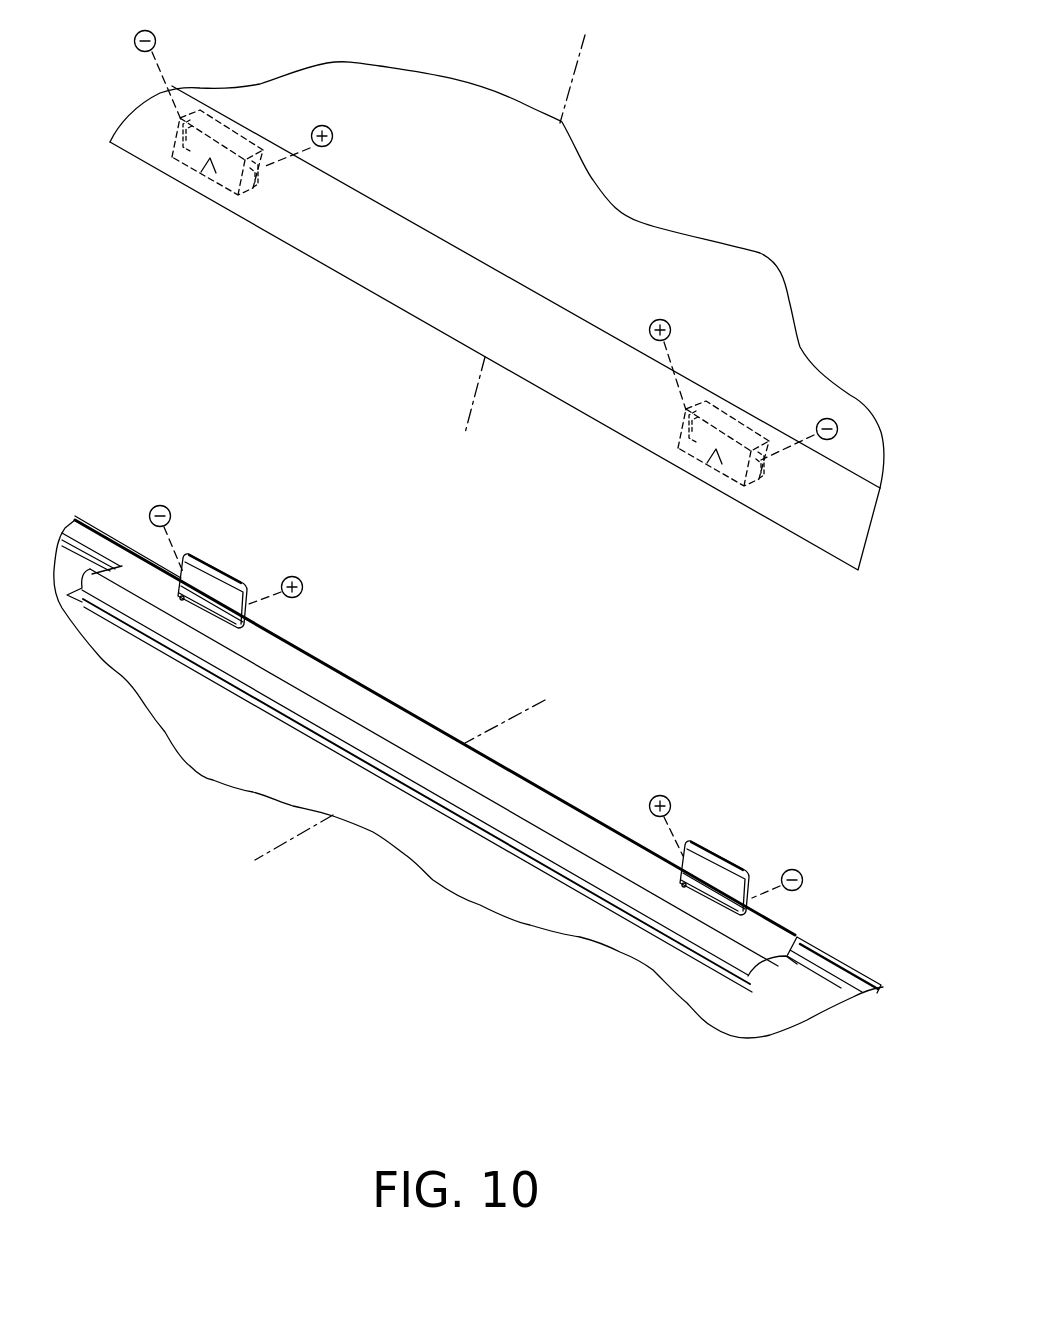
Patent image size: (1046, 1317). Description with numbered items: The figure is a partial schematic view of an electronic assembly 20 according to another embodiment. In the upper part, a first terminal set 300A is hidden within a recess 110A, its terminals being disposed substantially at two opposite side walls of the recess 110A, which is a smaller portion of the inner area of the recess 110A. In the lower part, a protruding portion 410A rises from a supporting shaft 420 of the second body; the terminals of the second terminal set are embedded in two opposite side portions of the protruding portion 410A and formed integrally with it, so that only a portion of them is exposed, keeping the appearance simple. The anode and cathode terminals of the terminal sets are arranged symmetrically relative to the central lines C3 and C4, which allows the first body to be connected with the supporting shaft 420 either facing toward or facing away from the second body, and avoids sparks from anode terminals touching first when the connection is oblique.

The electronic assembly 20 is at (821, 1148).
The recess 110A is at (207, 168).
The first terminal set 300A is at (243, 135).
The protruding portion 410A is at (208, 578).
The supporting shaft 420 is at (355, 697).
The central line C3 is at (470, 410).
The central line C4 is at (513, 715).